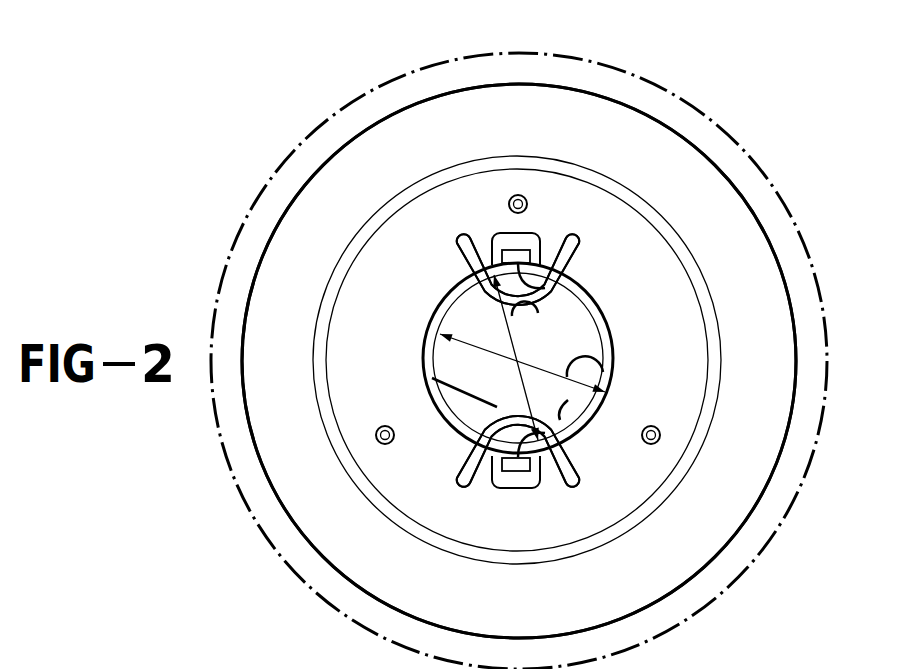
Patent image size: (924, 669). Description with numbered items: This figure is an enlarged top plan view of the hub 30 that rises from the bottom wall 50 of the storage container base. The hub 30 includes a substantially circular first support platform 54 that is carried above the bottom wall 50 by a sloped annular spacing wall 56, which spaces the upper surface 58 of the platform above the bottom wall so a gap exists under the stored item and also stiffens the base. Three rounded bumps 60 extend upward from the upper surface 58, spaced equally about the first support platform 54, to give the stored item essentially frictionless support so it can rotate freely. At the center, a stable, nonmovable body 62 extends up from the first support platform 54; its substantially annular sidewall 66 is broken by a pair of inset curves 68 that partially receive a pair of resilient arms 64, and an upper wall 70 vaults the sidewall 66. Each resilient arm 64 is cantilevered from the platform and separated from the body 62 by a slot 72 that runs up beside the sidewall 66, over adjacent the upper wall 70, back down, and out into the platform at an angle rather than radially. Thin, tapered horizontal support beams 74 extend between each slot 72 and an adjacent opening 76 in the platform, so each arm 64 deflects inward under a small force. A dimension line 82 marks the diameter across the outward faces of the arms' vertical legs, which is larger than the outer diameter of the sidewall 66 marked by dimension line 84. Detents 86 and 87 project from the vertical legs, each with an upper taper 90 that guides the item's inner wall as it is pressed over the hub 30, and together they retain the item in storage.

The hub 30 is at (248, 168).
The bottom wall 50 is at (790, 463).
The first support platform 54 is at (640, 488).
The annular spacing wall 56 is at (722, 487).
The upper surface of first support platform 58 is at (352, 313).
The bumps 60 is at (517, 195).
The body 62 is at (443, 280).
The resilient arms 64 is at (487, 418).
The sidewall 66 is at (424, 351).
The inset curves 68 is at (424, 371).
The upper wall 70 is at (575, 398).
The slot 72 is at (460, 242).
The horizontal support beams 74 is at (482, 255).
The opening 76 is at (504, 238).
The diameter of vertical legs 82 is at (508, 333).
The outer diameter of sidewall 84 is at (603, 372).
The detent 86 is at (532, 240).
The detent 87 is at (505, 485).
The upper taper 90 is at (545, 288).